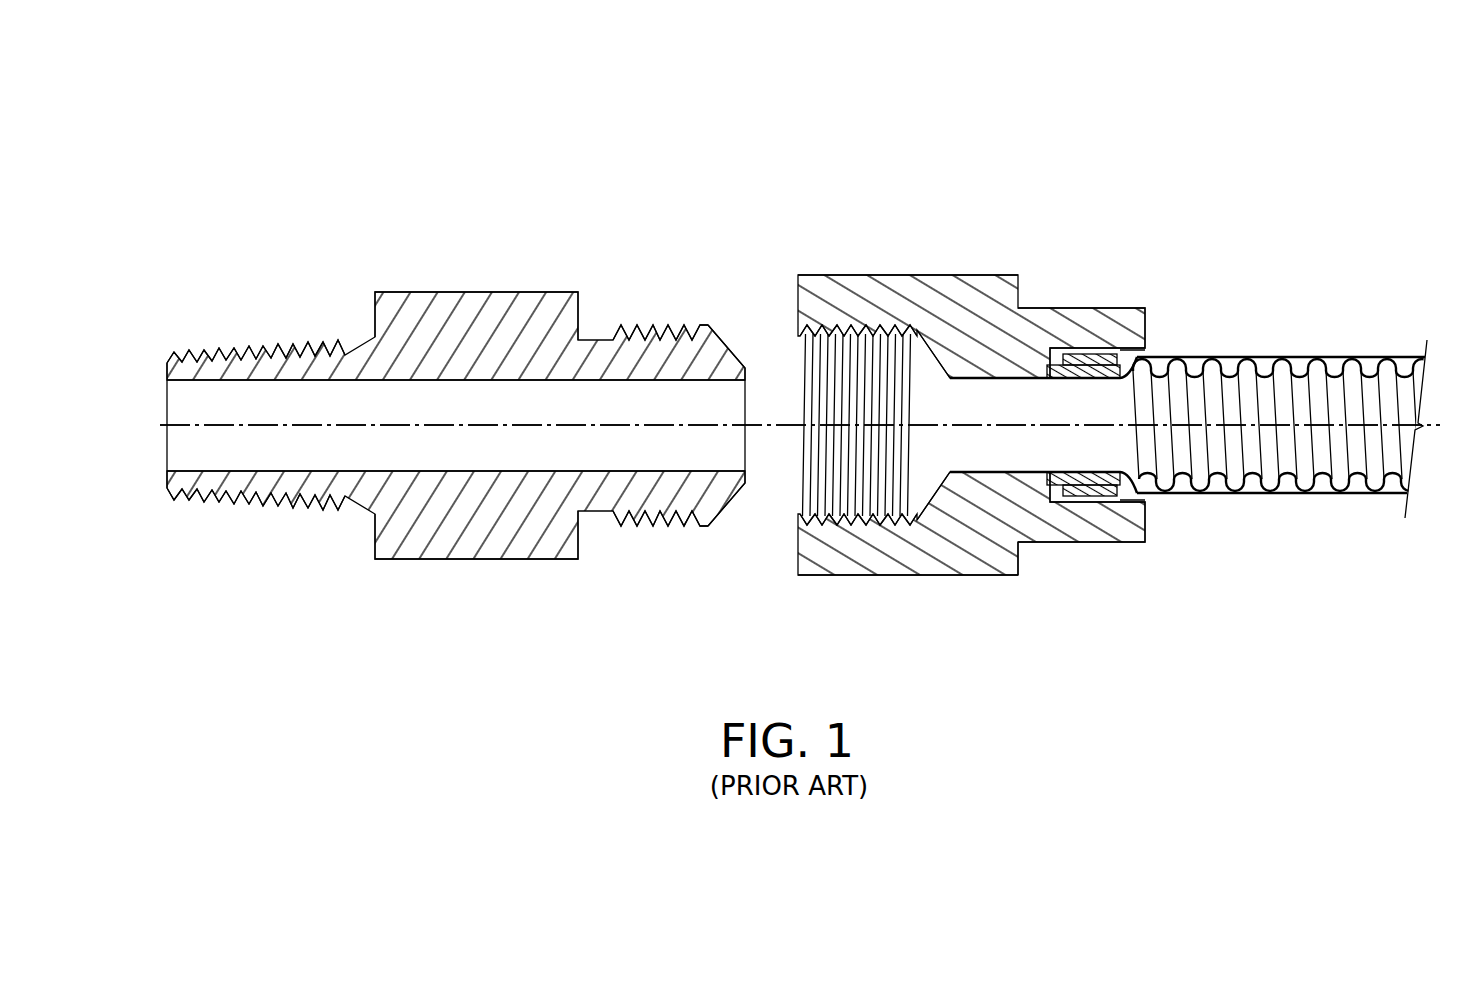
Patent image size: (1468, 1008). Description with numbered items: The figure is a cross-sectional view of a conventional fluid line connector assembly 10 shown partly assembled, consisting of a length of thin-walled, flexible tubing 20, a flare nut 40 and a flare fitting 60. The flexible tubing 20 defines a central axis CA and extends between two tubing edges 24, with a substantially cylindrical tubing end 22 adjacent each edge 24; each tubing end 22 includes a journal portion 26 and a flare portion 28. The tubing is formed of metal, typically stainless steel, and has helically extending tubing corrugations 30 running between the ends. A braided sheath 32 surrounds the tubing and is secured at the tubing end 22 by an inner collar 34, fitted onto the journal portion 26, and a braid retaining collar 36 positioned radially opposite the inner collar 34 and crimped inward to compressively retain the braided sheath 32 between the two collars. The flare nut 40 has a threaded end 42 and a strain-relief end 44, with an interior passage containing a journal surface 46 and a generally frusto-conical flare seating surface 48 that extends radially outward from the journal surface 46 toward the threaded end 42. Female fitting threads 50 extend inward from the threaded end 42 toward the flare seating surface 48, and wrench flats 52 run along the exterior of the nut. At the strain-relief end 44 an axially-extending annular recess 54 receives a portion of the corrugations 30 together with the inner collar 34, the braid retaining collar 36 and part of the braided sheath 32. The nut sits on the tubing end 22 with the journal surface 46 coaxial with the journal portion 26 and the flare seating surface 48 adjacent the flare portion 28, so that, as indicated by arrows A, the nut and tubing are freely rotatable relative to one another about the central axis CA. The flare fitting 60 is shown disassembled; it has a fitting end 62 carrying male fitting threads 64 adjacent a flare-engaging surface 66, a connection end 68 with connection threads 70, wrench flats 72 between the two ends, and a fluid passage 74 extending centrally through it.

The fluid line connector assembly 10 is at (714, 182).
The flexible tubing 20 is at (1313, 340).
The tubing end 22 is at (1028, 445).
The tubing edge 24 is at (906, 502).
The journal portion 26 is at (1048, 388).
The flare portion 28 is at (933, 372).
The tubing corrugations 30 is at (1353, 480).
The braided sheath 32 is at (1236, 356).
The inner collar 34 is at (1060, 483).
The braid retaining collar 36 is at (1100, 356).
The flare nut 40 is at (1012, 602).
The threaded end 42 is at (808, 252).
The strain-relief end 44 is at (1141, 272).
The journal surface 46 is at (986, 376).
The flare seating surface 48 is at (948, 503).
The female fitting threads 50 is at (796, 512).
The wrench flats 52 is at (902, 285).
The annular recess 54 is at (1128, 500).
The flare fitting 60 is at (448, 600).
The fitting end 62 is at (675, 557).
The male fitting threads 64 is at (679, 330).
The flare-engaging surface 66 is at (747, 370).
The connection end 68 is at (200, 335).
The connection threads 70 is at (262, 343).
The wrench flats 72 is at (478, 292).
The fluid passage 74 is at (252, 440).
The central axis CA is at (779, 430).
The arrows A is at (1095, 300).